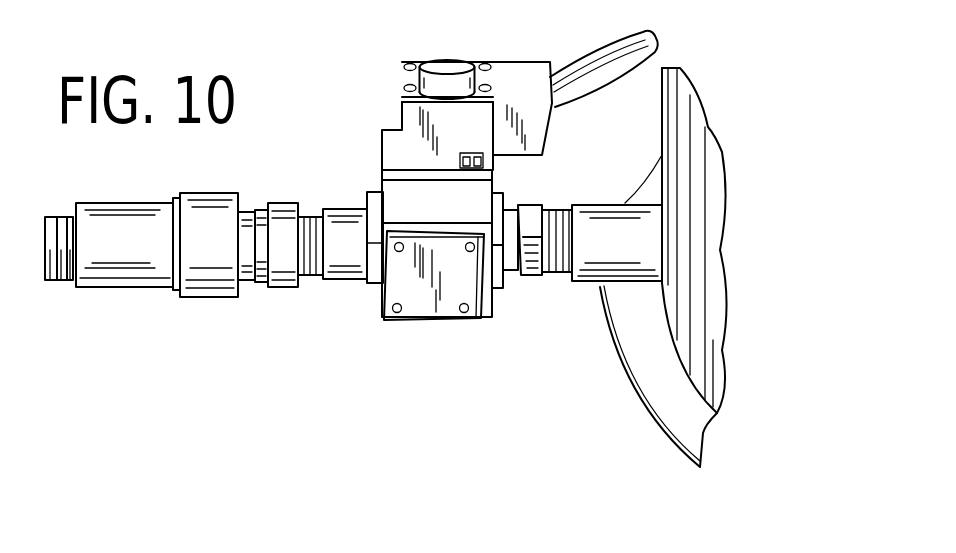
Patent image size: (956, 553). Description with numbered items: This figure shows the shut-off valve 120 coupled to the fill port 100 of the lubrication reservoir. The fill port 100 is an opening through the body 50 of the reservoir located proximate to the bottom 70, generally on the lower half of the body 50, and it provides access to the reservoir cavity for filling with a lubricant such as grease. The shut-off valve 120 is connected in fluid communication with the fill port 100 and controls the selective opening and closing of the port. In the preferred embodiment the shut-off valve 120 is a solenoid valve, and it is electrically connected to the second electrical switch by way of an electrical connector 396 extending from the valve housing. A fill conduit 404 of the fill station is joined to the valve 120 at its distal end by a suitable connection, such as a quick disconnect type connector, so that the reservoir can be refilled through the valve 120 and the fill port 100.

The body 50 is at (662, 113).
The bottom plate 70 is at (624, 378).
The fill port 100 is at (620, 248).
The shut-off valve 120 is at (417, 302).
The electrical connector 396 is at (602, 72).
The fill conduit 404 is at (55, 280).